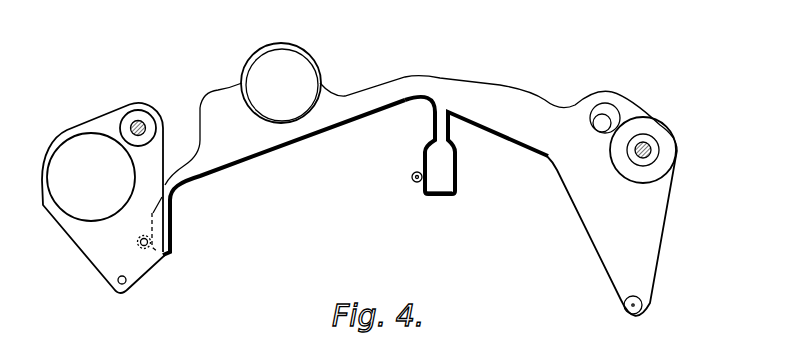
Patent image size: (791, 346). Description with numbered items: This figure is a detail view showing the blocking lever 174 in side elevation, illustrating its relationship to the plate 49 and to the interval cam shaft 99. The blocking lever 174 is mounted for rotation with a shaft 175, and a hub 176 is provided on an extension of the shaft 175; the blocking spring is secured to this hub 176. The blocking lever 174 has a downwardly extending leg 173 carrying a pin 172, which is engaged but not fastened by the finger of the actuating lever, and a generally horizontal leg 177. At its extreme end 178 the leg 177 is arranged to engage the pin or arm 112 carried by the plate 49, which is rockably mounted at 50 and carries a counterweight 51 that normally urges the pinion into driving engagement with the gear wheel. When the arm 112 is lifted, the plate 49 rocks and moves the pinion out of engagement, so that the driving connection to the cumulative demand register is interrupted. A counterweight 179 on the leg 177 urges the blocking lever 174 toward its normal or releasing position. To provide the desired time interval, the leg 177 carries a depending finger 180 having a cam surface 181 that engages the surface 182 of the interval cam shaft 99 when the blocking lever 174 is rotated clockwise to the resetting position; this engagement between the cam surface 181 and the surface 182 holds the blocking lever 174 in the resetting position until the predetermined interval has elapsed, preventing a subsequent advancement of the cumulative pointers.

The plate 49 is at (108, 126).
The rocking axis of plate 50 is at (140, 121).
The counterweight 51 is at (68, 202).
The arm 112 is at (145, 248).
The extreme end of leg 178 is at (175, 233).
The depending finger 180 is at (438, 128).
The surface of shaft 182 is at (412, 170).
The interval cam shaft 99 is at (422, 182).
The cam surface 181 is at (425, 188).
The horizontal leg 177 is at (512, 92).
The counterweight 179 is at (295, 60).
The blocking lever 174 is at (700, 40).
The downwardly extending leg 173 is at (652, 243).
The pin 172 is at (641, 305).
The shaft 175 is at (650, 152).
The hub 176 is at (650, 135).